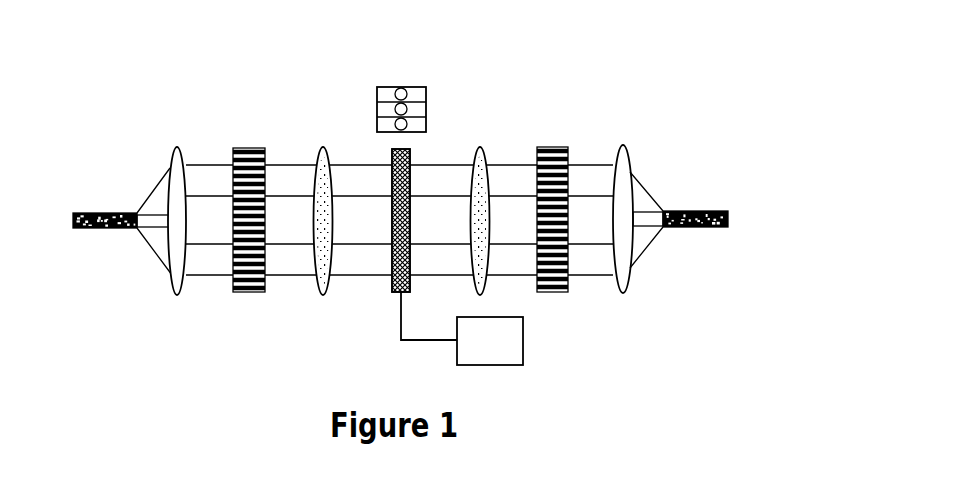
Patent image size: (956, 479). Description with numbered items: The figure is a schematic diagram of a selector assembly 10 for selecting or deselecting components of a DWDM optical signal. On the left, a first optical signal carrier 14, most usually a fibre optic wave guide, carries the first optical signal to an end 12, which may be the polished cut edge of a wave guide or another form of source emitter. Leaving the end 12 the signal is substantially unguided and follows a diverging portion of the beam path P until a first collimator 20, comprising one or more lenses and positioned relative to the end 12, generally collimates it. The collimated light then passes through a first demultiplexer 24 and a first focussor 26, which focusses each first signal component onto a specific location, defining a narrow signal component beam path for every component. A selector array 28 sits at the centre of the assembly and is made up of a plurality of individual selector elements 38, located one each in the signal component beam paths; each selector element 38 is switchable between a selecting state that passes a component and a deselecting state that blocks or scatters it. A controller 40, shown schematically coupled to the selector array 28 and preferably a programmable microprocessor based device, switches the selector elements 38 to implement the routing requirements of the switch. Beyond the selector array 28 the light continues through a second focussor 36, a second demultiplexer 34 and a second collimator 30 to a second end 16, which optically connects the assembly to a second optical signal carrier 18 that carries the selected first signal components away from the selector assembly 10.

The selector assembly 10 is at (666, 74).
The end 12 is at (140, 237).
The first optical signal carrier 14 is at (73, 230).
The second end 16 is at (658, 233).
The second optical signal carrier 18 is at (728, 227).
The first collimator 20 is at (177, 296).
The first demultiplexer 24 is at (250, 294).
The first focussor 26 is at (323, 147).
The selector array 28 is at (401, 150).
The second collimator 30 is at (626, 146).
The second demultiplexer 34 is at (548, 147).
The second focussor 36 is at (482, 147).
The selector elements 38 is at (405, 87).
The controller 40 is at (523, 338).
The beam path P is at (198, 184).